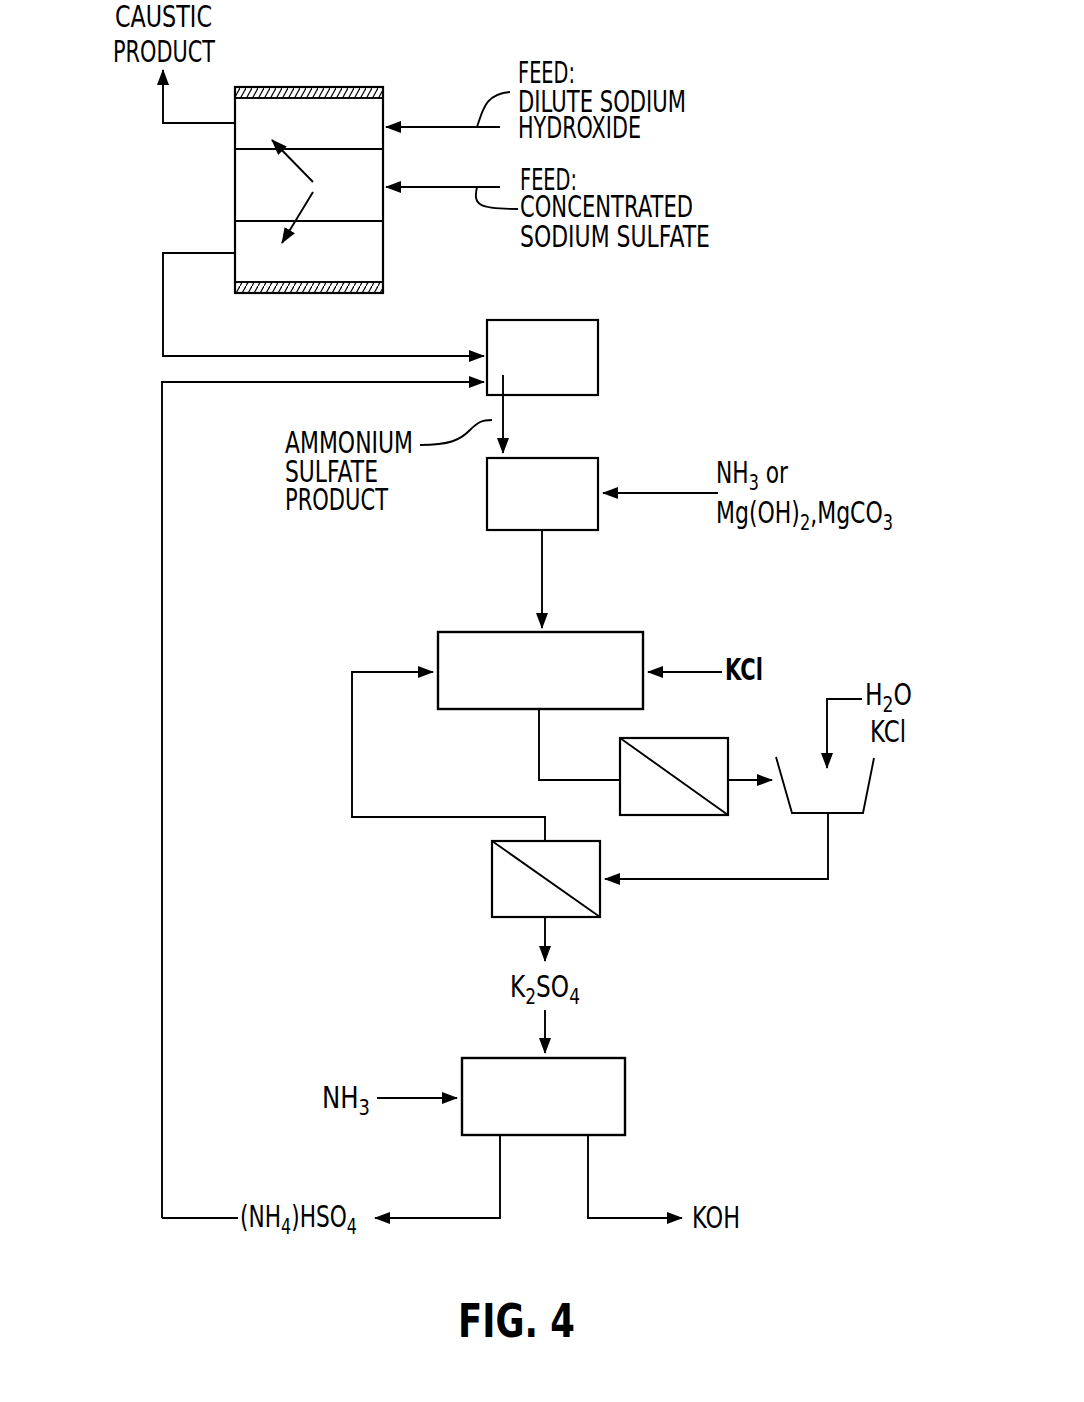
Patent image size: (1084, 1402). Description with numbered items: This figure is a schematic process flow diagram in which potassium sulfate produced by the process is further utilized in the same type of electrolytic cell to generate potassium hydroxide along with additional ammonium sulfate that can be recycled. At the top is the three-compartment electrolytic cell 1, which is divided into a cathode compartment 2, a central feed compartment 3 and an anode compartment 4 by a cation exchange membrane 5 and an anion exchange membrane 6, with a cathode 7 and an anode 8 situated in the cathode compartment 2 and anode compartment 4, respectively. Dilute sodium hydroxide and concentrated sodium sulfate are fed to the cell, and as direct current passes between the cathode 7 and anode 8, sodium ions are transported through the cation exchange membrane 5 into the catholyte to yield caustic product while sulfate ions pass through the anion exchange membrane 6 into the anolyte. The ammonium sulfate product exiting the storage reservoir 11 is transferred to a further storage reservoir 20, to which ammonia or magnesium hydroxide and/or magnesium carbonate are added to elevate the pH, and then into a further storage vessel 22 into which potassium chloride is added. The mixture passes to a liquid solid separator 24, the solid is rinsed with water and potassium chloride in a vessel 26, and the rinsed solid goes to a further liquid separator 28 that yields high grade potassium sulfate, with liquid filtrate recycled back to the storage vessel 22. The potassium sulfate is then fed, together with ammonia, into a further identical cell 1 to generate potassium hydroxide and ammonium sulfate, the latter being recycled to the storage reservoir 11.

The three-compartment electrolytic cell 1 is at (405, 529).
The cathode compartment 2 is at (247, 136).
The central feed compartment 3 is at (250, 178).
The anode compartment 4 is at (243, 242).
The cation exchange membrane 5 is at (357, 149).
The anion exchange membrane 6 is at (357, 221).
The cathode 7 is at (353, 88).
The anode 8 is at (323, 294).
The storage reservoir 11 is at (497, 333).
The storage reservoir 20 is at (577, 530).
The storage vessel 22 is at (554, 683).
The liquid solid separator 24 is at (728, 812).
The vessel 26 is at (848, 806).
The liquid separator 28 is at (593, 897).